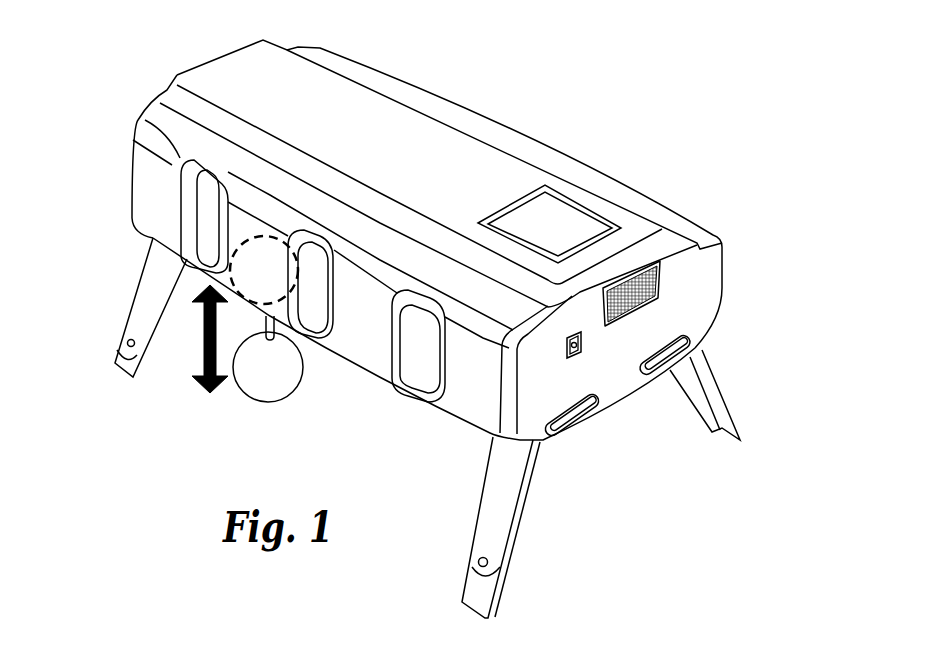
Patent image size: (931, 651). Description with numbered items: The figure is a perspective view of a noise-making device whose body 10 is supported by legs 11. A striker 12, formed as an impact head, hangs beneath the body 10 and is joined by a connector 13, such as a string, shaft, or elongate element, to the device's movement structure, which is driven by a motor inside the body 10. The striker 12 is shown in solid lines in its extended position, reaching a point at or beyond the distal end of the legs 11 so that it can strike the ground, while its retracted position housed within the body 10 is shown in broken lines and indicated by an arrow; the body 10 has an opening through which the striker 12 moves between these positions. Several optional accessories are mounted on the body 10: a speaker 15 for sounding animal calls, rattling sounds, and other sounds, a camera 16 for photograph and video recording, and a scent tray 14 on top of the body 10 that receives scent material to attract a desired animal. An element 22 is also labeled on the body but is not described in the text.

The body 10 is at (430, 125).
The legs 11 is at (152, 282).
The striker 12 is at (303, 385).
The connector 13 is at (255, 325).
The scent tray 14 is at (557, 210).
The speaker 15 is at (663, 294).
The camera 16 is at (580, 353).
The slot opening 22 is at (300, 288).